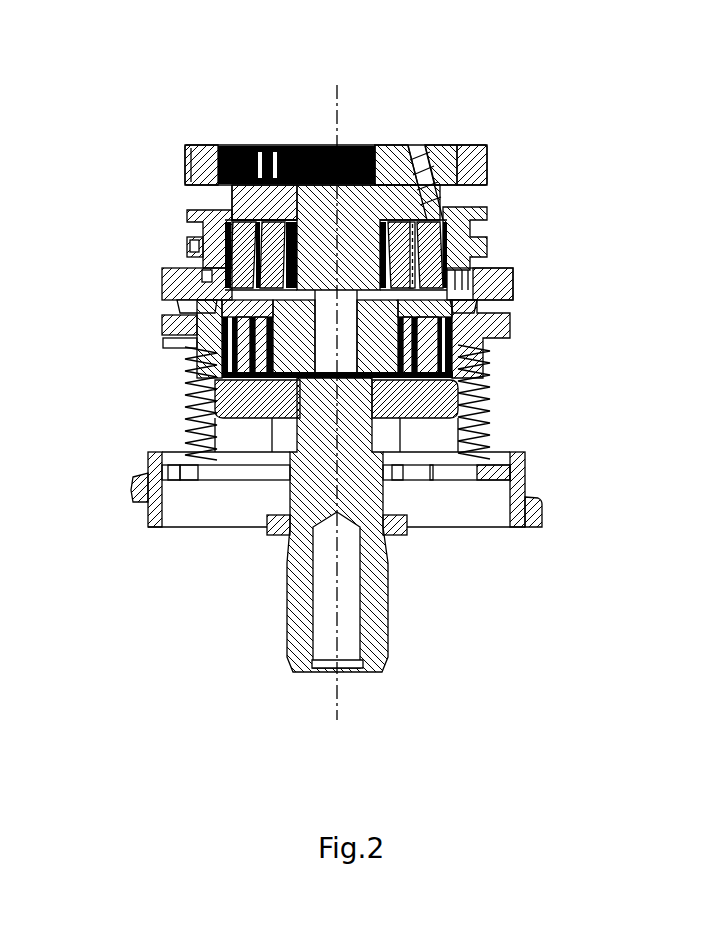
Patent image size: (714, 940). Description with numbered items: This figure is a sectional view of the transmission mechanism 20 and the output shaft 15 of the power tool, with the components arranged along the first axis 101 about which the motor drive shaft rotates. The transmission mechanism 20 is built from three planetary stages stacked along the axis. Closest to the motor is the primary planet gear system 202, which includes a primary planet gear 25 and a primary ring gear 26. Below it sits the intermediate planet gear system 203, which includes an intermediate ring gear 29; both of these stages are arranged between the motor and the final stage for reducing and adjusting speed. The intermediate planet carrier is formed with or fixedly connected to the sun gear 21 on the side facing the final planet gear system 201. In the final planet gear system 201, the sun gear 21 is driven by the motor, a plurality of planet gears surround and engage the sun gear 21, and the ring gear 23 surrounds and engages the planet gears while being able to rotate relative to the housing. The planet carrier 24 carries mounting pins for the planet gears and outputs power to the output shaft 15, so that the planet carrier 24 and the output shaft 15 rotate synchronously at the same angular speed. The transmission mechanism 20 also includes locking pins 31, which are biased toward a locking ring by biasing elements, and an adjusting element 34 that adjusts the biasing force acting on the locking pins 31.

The first axis 101 is at (338, 90).
The transmission mechanism 20 is at (426, 120).
The primary planet gear system 202 is at (447, 146).
The primary ring gear 26 is at (205, 162).
The primary planet gear 25 is at (447, 178).
The intermediate ring gear 29 is at (200, 237).
The intermediate planet gear system 203 is at (446, 250).
The locking pins 31 is at (476, 307).
The final planet gear system 201 is at (172, 322).
The sun gear 21 is at (196, 348).
The ring gear 23 is at (468, 362).
The planet carrier 24 is at (440, 403).
The output shaft 15 is at (375, 612).
The adjusting element 34 is at (147, 480).